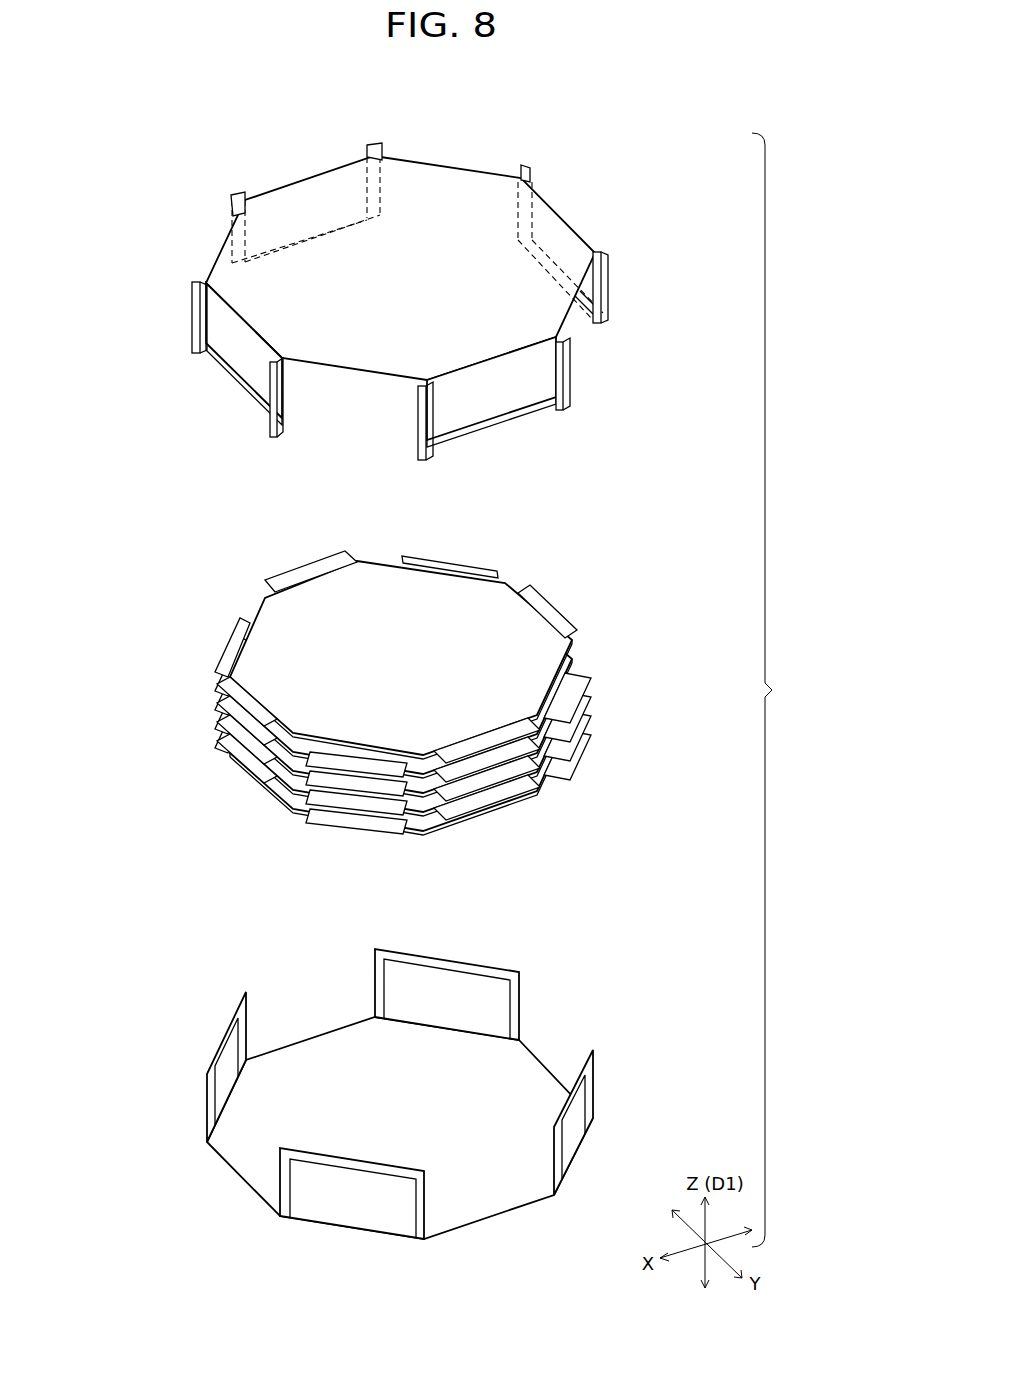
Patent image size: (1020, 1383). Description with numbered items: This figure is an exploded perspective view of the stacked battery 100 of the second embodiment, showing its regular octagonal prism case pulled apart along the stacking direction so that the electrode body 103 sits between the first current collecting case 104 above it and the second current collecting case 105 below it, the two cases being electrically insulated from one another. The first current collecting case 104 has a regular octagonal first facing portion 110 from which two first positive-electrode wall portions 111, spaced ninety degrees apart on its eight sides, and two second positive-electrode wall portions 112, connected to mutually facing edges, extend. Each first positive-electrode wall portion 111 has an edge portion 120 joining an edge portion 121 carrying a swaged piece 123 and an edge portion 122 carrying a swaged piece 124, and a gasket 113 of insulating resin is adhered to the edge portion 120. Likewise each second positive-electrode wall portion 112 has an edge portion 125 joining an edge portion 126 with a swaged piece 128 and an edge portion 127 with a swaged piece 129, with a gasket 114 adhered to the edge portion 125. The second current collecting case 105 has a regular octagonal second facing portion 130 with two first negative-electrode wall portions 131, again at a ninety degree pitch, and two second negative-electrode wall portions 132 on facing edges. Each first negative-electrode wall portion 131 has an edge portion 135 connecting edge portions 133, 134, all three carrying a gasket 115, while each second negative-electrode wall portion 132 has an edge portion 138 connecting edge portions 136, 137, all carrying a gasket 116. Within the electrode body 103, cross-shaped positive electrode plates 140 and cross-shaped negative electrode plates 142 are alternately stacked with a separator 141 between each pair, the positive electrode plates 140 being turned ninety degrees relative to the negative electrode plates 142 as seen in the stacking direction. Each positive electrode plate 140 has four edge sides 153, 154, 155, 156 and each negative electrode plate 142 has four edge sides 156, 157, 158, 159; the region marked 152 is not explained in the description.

The stacked battery 100 is at (779, 690).
The electrode body 103 is at (140, 583).
The first current collecting case 104 is at (103, 170).
The second current collecting case 105 is at (138, 1010).
The first facing portion 110 is at (438, 193).
The first positive-electrode wall portion 111 is at (253, 370).
The second positive-electrode wall portion 112 is at (333, 198).
The gasket 113 is at (255, 402).
The gasket 114 is at (295, 247).
The gasket 115 is at (207, 1050).
The gasket 116 is at (498, 975).
The edge portion 120 is at (254, 428).
The edge portion 121 is at (294, 404).
The edge portion 122 is at (196, 276).
The swaged piece 123 is at (274, 440).
The swaged piece 124 is at (190, 319).
The edge portion 125 is at (288, 265).
The edge portion 126 is at (393, 180).
The edge portion 127 is at (222, 213).
The swaged piece 128 is at (373, 145).
The swaged piece 129 is at (239, 193).
The second facing portion 130 is at (322, 1050).
The first negative-electrode wall portion 131 is at (210, 1100).
The second negative-electrode wall portion 132 is at (445, 990).
The edge portion 133 is at (197, 1099).
The edge portion 134 is at (256, 1025).
The edge portion 135 is at (230, 1015).
The edge portion 136 is at (526, 1000).
The edge portion 137 is at (362, 975).
The edge portion 138 is at (415, 945).
The positive electrode plate 140 is at (572, 624).
The separator 141 is at (490, 605).
The negative electrode plate 142 is at (223, 658).
The tab 152 is at (552, 600).
The edge side 153 is at (257, 748).
The edge side 154 is at (492, 758).
The edge side 155 is at (302, 568).
The edge side 156 is at (579, 742).
The edge side 157 is at (233, 630).
The edge side 158 is at (484, 557).
The edge side 159 is at (352, 782).